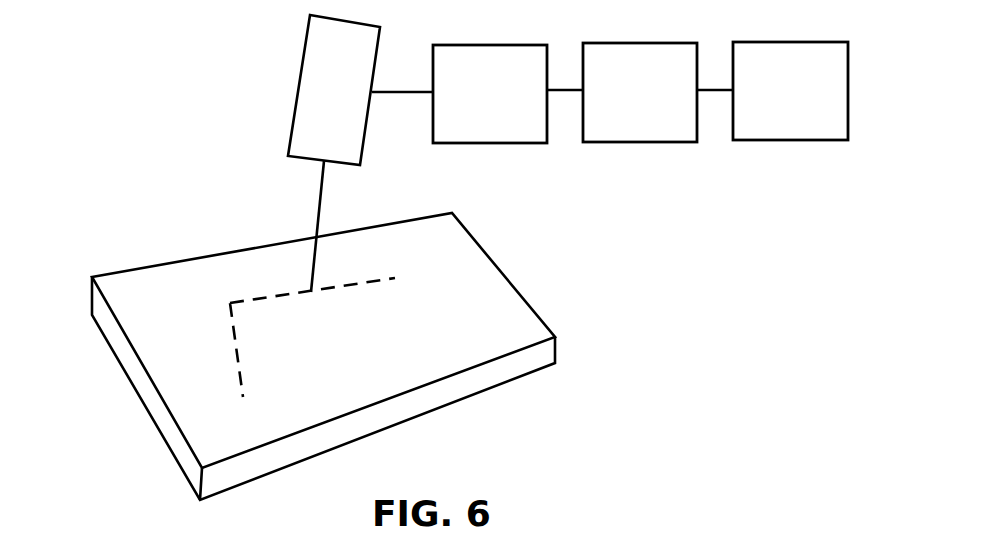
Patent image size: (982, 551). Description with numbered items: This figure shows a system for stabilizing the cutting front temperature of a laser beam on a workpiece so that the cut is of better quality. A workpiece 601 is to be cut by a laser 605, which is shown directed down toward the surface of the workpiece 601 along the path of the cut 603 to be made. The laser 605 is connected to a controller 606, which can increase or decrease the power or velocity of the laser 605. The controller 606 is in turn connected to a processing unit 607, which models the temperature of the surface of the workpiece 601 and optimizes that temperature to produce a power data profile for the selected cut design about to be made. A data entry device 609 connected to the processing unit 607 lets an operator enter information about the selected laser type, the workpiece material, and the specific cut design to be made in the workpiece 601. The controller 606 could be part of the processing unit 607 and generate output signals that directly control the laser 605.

The workpiece 601 is at (510, 307).
The scribe line 603 is at (247, 298).
The laser 605 is at (303, 52).
The controller 606 is at (521, 108).
The processing unit 607 is at (671, 108).
The data entry device 609 is at (821, 107).